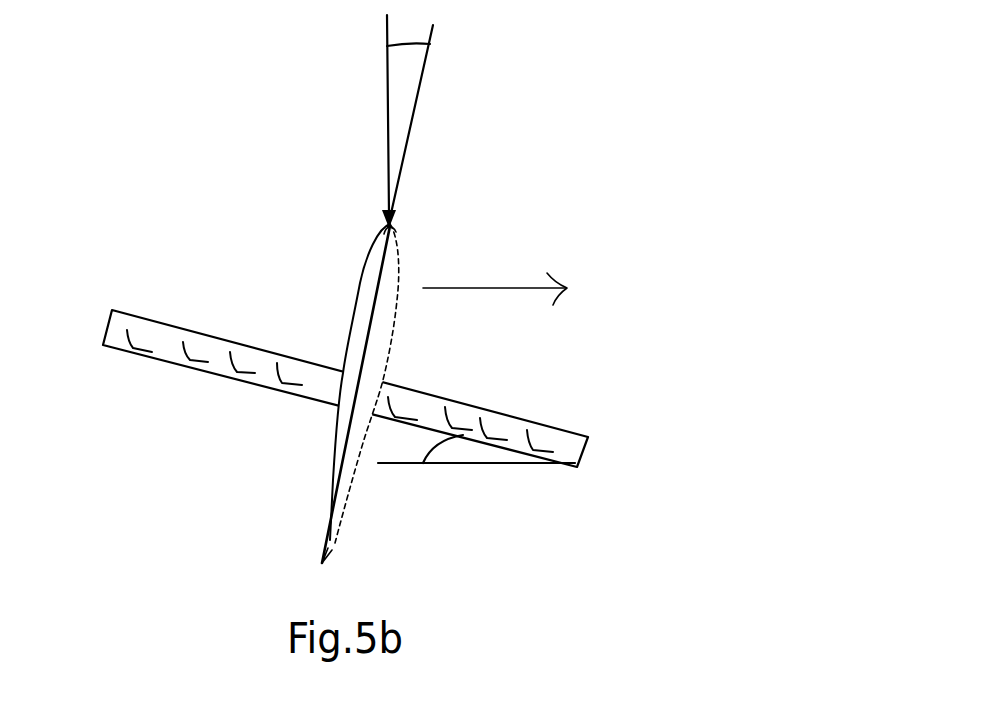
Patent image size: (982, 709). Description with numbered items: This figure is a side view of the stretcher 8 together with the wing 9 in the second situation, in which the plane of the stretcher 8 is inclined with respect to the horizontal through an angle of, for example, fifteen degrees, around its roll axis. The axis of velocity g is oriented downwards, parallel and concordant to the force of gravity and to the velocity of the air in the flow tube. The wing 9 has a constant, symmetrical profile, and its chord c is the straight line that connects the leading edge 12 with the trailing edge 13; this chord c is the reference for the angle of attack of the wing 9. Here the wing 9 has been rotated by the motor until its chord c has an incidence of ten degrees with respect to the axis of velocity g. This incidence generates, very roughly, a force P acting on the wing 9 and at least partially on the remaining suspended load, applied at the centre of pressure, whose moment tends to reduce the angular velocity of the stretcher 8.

The stretcher 8 is at (217, 330).
The wing 9 is at (412, 272).
The leading edge 12 is at (390, 226).
The trailing edge 13 is at (318, 553).
The axis of velocity g is at (375, 103).
The force P is at (478, 283).
The chord c is at (378, 350).